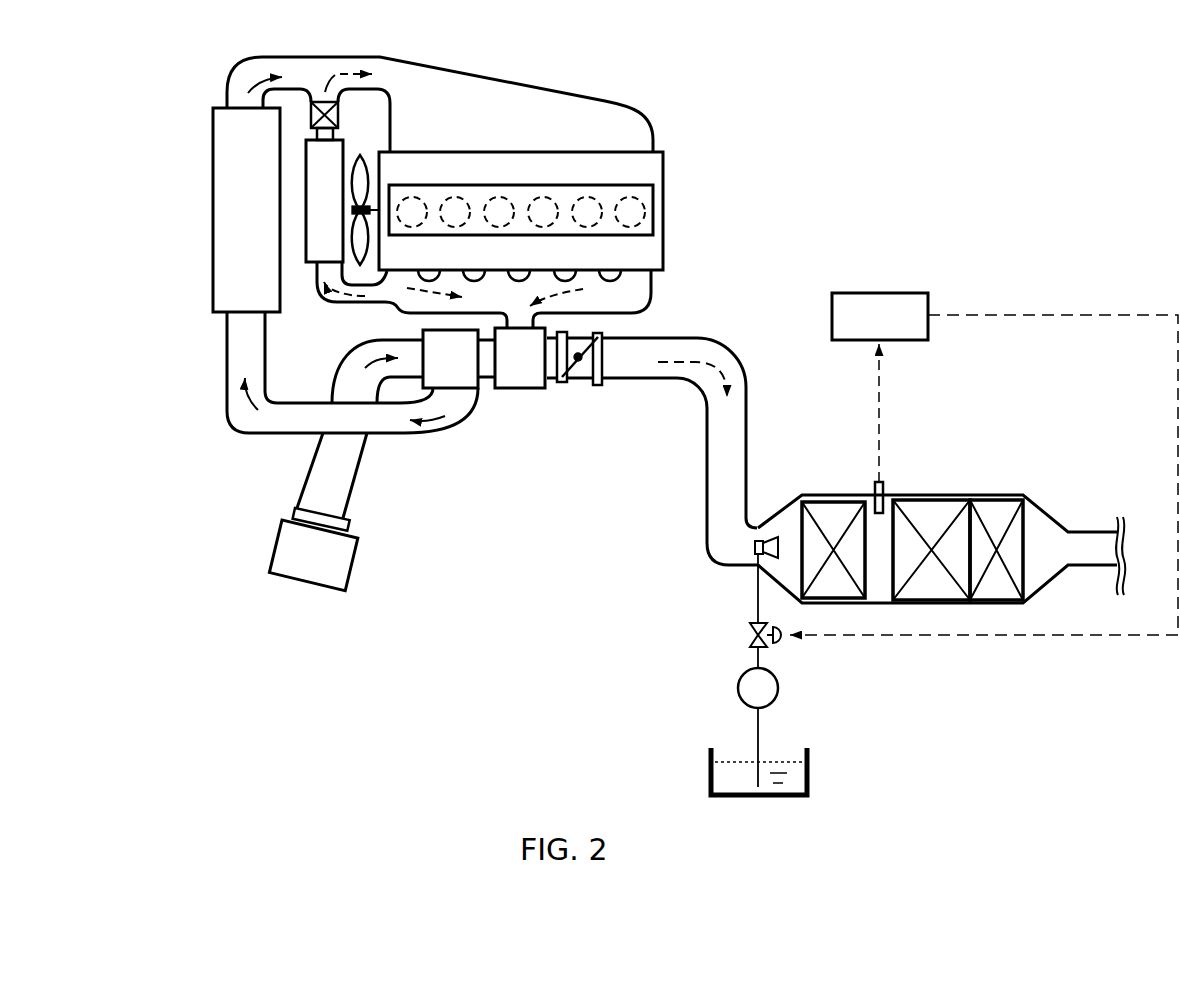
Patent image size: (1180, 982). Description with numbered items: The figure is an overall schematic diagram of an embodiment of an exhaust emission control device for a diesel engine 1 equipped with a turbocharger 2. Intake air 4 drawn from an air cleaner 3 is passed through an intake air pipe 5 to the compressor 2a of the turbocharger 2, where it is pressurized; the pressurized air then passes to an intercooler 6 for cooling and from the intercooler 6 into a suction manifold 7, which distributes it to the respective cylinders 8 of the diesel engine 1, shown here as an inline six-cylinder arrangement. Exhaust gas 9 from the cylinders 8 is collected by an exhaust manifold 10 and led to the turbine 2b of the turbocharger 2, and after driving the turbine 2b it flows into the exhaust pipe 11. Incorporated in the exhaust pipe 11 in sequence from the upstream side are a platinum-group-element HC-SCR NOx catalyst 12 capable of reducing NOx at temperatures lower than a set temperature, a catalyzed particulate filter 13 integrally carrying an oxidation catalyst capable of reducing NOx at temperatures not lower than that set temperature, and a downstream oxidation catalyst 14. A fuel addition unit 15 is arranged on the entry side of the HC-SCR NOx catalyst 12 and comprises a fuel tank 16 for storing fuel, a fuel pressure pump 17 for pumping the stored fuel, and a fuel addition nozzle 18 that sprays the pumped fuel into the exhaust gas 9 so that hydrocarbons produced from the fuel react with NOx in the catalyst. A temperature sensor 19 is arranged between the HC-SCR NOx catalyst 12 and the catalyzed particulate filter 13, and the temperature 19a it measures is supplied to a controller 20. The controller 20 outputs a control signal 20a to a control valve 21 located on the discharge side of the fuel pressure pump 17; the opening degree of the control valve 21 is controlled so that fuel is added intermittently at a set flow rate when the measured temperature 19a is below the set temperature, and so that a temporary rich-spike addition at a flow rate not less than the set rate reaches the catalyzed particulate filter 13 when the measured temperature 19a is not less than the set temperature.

The diesel engine 1 is at (684, 211).
The turbocharger 2 is at (523, 413).
The compressor 2a is at (472, 380).
The turbine 2b is at (538, 377).
The air cleaner 3 is at (295, 555).
The intake air 4 is at (237, 403).
The intake air pipe 5 is at (227, 333).
The intercooler 6 is at (218, 190).
The suction manifold 7 is at (617, 110).
The cylinders 8 is at (587, 210).
The exhaust gas 9 is at (575, 318).
The exhaust manifold 10 is at (643, 290).
The exhaust pipe 11 is at (747, 395).
The HC-SCR NOx catalyst 12 is at (845, 513).
The catalyzed particulate filter 13 is at (940, 513).
The downstream oxidation catalyst 14 is at (1003, 513).
The fuel addition unit 15 is at (740, 613).
The fuel tank 16 is at (708, 780).
The fuel pressure pump 17 is at (738, 688).
The fuel addition nozzle 18 is at (774, 535).
The temperature sensor 19 is at (890, 480).
The temperature 19a is at (880, 380).
The controller 20 is at (913, 290).
The control signal 20a is at (1045, 315).
The control valve 21 is at (750, 645).